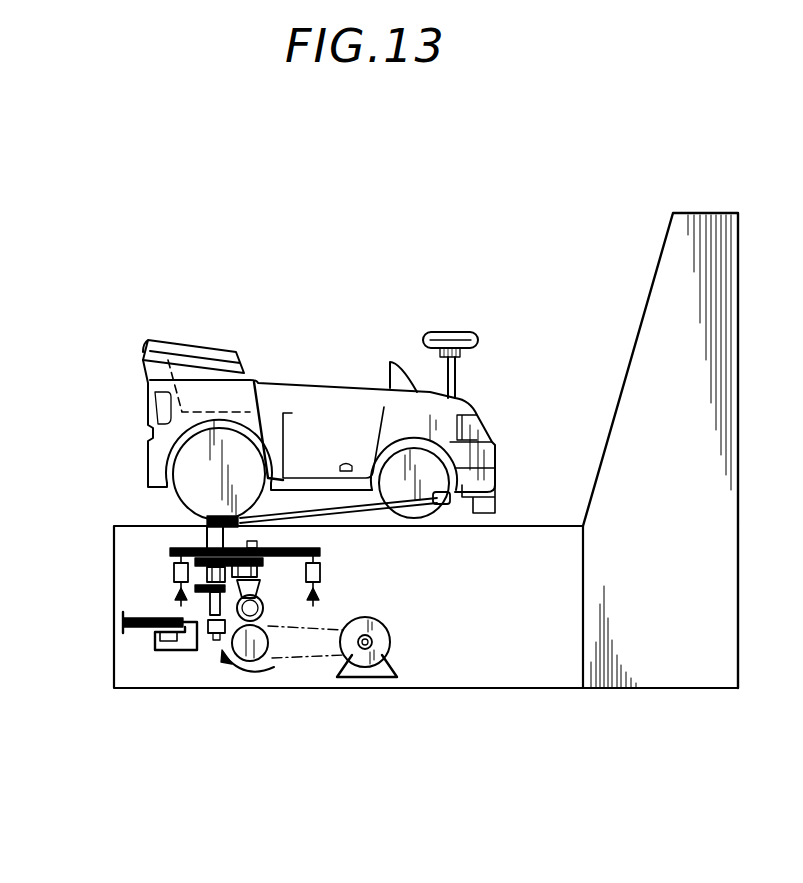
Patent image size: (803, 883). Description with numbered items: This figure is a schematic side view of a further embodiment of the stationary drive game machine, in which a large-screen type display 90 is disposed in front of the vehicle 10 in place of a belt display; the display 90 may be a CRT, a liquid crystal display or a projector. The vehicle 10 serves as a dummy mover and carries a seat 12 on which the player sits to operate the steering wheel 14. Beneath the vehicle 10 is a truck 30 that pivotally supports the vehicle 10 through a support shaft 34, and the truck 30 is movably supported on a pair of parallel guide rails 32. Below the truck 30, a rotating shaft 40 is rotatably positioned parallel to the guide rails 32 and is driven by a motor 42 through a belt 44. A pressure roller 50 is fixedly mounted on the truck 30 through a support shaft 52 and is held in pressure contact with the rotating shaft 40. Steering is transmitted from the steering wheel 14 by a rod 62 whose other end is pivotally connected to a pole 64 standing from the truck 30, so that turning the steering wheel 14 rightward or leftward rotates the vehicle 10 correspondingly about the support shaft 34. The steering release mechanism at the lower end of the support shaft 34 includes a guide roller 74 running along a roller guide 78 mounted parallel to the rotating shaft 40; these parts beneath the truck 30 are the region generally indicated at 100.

The vehicle 10 is at (353, 388).
The seat 12 is at (205, 350).
The steering wheel 14 is at (478, 337).
The truck 30 is at (190, 547).
The guide rails 32 is at (172, 590).
The support shaft 34 is at (208, 521).
The rotating shaft 40 is at (280, 660).
The motor 42 is at (388, 644).
The belt 44 is at (327, 655).
The pressure roller 50 is at (292, 615).
The support shaft 52 is at (255, 578).
The rod 62 is at (322, 505).
The pole 64 is at (248, 530).
The guide roller 74 is at (212, 642).
The roller guide 78 is at (162, 628).
The large-screen type display 90 is at (660, 262).
The parts generally indicated 100 is at (203, 665).